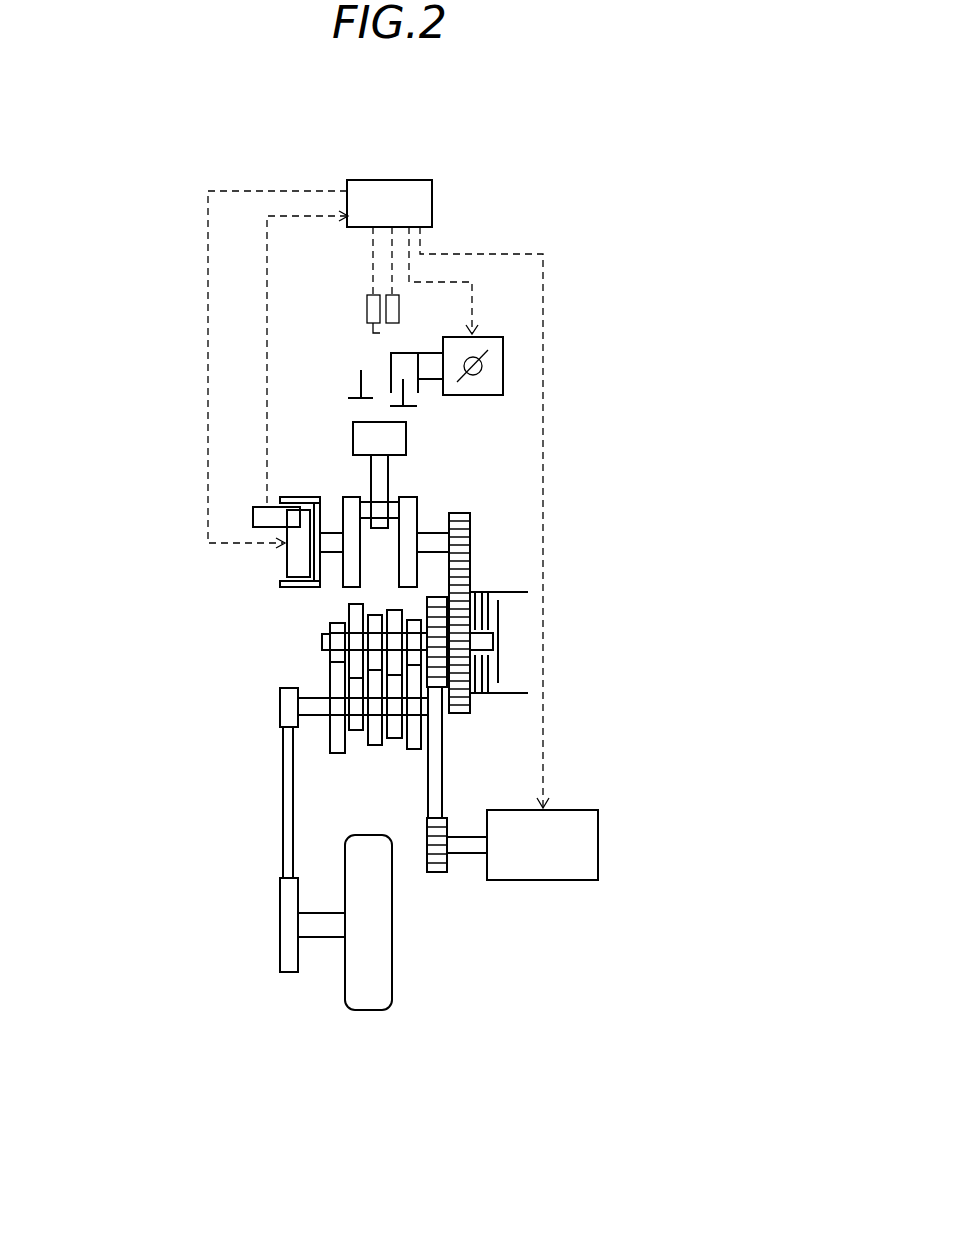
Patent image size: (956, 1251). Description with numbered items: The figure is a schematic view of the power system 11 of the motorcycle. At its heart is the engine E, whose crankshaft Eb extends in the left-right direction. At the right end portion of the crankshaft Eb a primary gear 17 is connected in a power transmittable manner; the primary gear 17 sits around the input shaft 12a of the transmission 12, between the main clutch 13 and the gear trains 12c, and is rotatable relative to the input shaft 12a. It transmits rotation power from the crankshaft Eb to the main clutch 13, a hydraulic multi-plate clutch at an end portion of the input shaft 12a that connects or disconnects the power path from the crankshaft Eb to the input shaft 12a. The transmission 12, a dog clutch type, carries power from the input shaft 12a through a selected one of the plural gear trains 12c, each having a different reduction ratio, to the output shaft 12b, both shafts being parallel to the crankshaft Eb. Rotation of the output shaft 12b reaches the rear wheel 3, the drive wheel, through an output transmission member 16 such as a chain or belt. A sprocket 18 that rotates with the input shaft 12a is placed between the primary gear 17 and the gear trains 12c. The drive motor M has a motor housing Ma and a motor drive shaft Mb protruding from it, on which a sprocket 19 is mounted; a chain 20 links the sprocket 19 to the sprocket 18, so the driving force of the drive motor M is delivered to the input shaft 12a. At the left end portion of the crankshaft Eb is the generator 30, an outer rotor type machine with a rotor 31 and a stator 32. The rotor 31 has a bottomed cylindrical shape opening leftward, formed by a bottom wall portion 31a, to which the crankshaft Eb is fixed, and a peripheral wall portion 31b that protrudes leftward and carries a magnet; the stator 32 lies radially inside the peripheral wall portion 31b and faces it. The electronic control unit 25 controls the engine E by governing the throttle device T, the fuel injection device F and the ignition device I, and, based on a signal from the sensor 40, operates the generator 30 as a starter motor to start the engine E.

The power unit 11 is at (135, 263).
The electronic control unit 25 is at (395, 180).
The ignition device I is at (367, 311).
The fuel injection device F is at (399, 311).
The throttle device T is at (477, 395).
The engine E is at (325, 424).
The crankshaft Eb is at (434, 535).
The rotor 31 is at (292, 495).
The bottom wall portion 31a is at (322, 515).
The peripheral wall portion 31b is at (297, 588).
The stator 32 is at (280, 560).
The generator 30 is at (265, 575).
The sensor 40 is at (260, 505).
The transmission 12 is at (287, 691).
The input shaft 12a is at (317, 638).
The output shaft 12b is at (313, 707).
The gear trains 12c is at (327, 670).
The output transmission member 16 is at (283, 805).
The primary gear 17 is at (470, 703).
The main clutch 13 is at (503, 590).
The sprocket 18 is at (428, 688).
The chain 20 is at (443, 773).
The sprocket 19 is at (437, 872).
The motor drive shaft Mb is at (465, 853).
The motor housing Ma is at (540, 880).
The drive motor M is at (538, 585).
The rear wheel 3 is at (368, 1003).